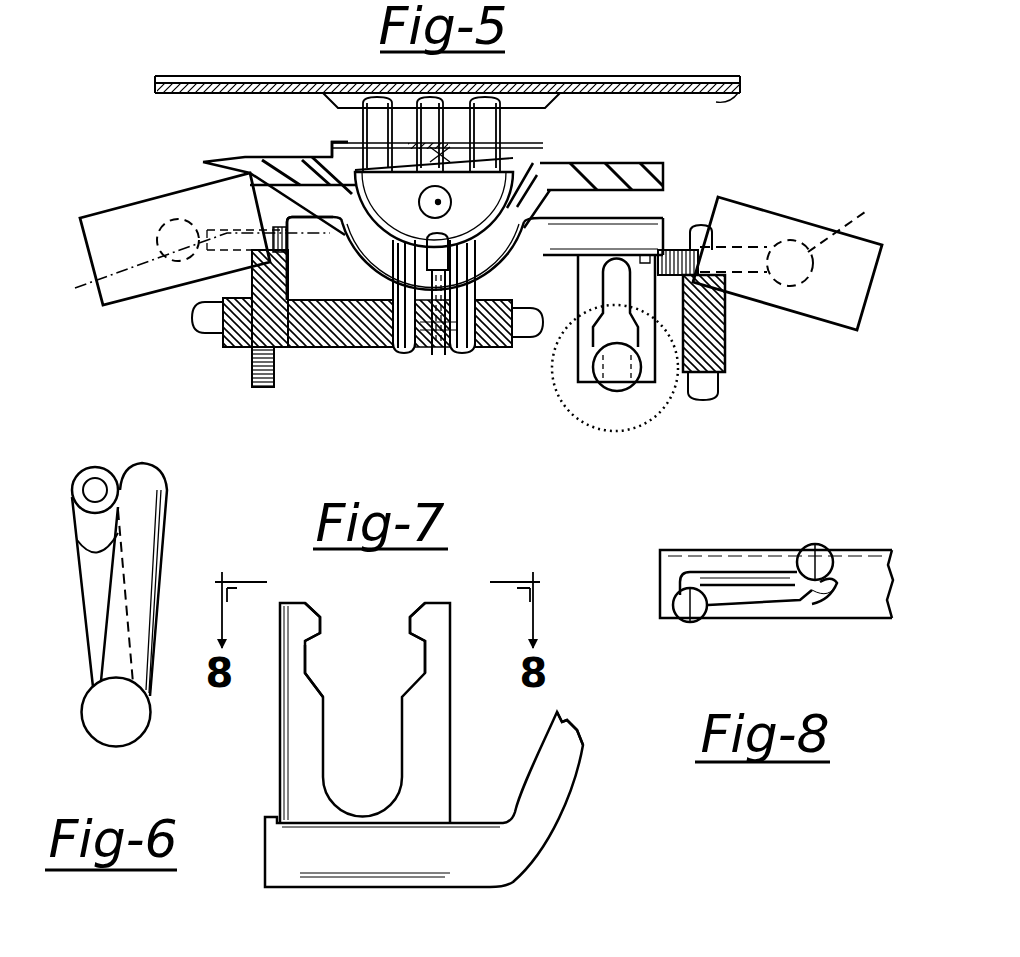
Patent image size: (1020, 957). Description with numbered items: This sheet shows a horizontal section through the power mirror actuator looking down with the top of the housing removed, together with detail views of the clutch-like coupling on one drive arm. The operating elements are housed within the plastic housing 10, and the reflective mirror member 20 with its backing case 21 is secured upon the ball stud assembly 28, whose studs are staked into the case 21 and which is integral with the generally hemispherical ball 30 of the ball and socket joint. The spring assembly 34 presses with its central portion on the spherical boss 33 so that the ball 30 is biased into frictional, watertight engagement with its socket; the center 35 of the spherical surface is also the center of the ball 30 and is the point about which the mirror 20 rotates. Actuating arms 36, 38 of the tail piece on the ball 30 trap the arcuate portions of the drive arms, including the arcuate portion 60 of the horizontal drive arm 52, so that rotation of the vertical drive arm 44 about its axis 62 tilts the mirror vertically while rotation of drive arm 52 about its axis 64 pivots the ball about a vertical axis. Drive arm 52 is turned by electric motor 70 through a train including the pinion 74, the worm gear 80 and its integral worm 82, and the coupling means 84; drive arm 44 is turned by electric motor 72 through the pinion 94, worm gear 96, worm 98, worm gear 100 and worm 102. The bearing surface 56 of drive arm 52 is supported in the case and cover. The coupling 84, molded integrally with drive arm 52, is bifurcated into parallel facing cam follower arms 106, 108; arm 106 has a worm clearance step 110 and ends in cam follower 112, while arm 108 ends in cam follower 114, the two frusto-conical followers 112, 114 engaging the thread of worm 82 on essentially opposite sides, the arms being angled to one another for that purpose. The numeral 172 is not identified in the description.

In FIG. 5, the housing 10 is at (225, 163).
In FIG. 5, the reflective mirror member 20 is at (245, 76).
In FIG. 5, the mirror case 21 is at (727, 110).
In FIG. 5, the ball stud assembly 28 is at (512, 116).
In FIG. 5, the ball 30 is at (434, 209).
In FIG. 5, the spherical boss 33 is at (410, 150).
In FIG. 5, the spring assembly 34 is at (337, 136).
In FIG. 5, the center of spherical surface 35 is at (463, 162).
In FIG. 5, the actuating arm 36 is at (473, 277).
In FIG. 5, the actuating arm 38 is at (397, 356).
In FIG. 5, the vertical drive arm 44 is at (543, 273).
In FIG. 7, the horizontal drive arm 52 is at (582, 773).
In FIG. 6, the bearing surface 56 is at (115, 741).
In FIG. 7, the bearing surface 56 is at (473, 888).
In FIG. 8, the bearing surface 56 is at (857, 563).
In FIG. 5, the arcuate portion 60 is at (437, 357).
In FIG. 5, the axis of rotation 62 is at (225, 235).
In FIG. 5, the axis of rotation 64 is at (436, 202).
In FIG. 5, the electric motor 70 is at (158, 188).
In FIG. 5, the electric motor 72 is at (768, 208).
In FIG. 5, the pinion 74 is at (184, 269).
In FIG. 5, the worm gear 80 is at (263, 389).
In FIG. 5, the worm 82 is at (321, 350).
In FIG. 6, the coupling means 84 is at (66, 612).
In FIG. 7, the coupling means 84 is at (265, 740).
In FIG. 8, the coupling means 84 is at (708, 640).
In FIG. 5, the pinion 94 is at (837, 238).
In FIG. 5, the worm gear 96 is at (678, 250).
In FIG. 5, the worm 98 is at (727, 338).
In FIG. 5, the worm gear 100 is at (600, 433).
In FIG. 5, the worm 102 is at (612, 392).
In FIG. 6, the cam follower arm portion 106 is at (143, 560).
In FIG. 7, the cam follower arm portion 106 is at (298, 738).
In FIG. 8, the cam follower arm portion 106 is at (670, 598).
In FIG. 6, the cam follower arm portion 108 is at (95, 637).
In FIG. 7, the cam follower arm portion 108 is at (430, 732).
In FIG. 8, the cam follower arm portion 108 is at (850, 605).
In FIG. 7, the worm clearance step 110 is at (307, 680).
In FIG. 7, the cam follower 112 is at (310, 617).
In FIG. 6, the cam follower 114 is at (100, 483).
In FIG. 7, the cam follower 114 is at (421, 622).
In FIG. 8, the cam follower 114 is at (797, 560).
In FIG. 8, the clip bottom 172 is at (710, 607).